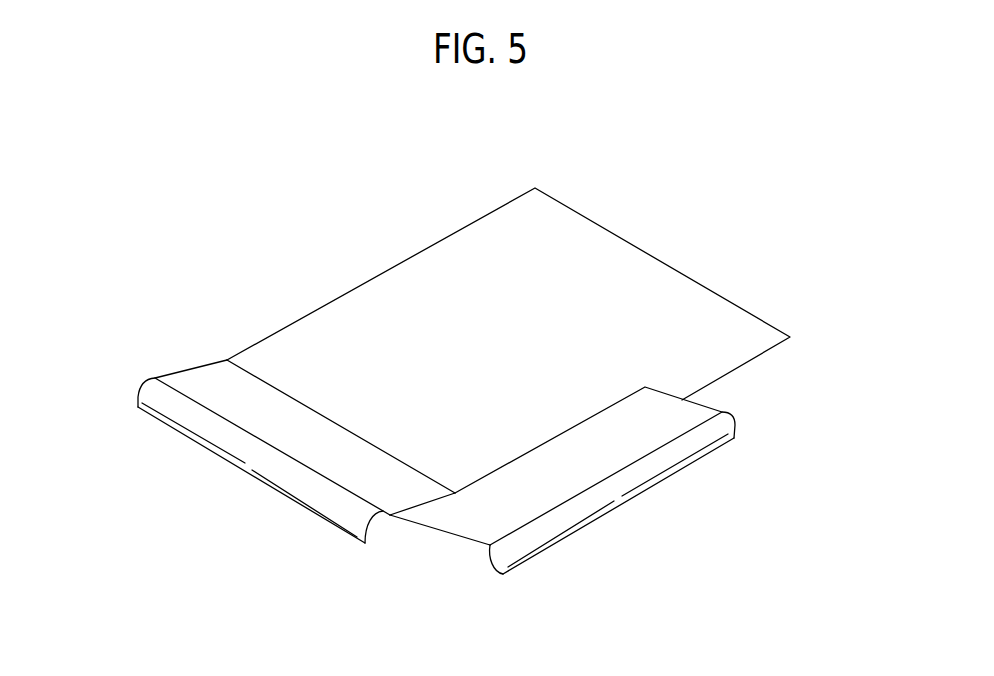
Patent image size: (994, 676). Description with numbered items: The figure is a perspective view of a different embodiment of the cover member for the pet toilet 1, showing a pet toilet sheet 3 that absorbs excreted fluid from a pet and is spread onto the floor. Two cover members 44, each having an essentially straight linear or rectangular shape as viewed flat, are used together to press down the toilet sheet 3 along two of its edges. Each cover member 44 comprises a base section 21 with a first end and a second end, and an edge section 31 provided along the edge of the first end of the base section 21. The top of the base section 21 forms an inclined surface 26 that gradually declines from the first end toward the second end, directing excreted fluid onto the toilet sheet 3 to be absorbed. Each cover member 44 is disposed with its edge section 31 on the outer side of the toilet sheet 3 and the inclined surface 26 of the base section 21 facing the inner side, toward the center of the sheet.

The pet toilet 1 is at (273, 278).
The pet toilet sheet 3 is at (460, 270).
The base section 21 is at (472, 520).
The inclined surface 26 is at (207, 383).
The edge section 31 is at (195, 427).
The cover member 44 is at (284, 505).